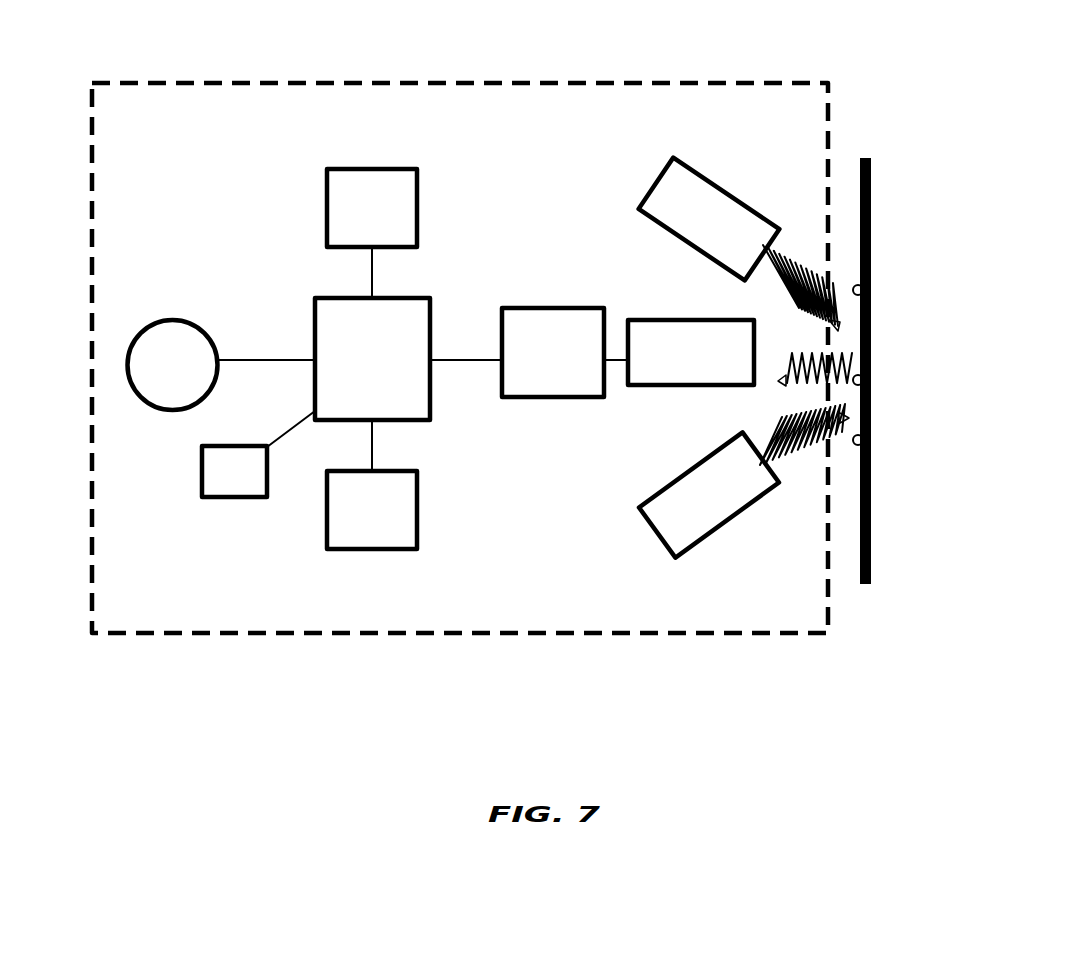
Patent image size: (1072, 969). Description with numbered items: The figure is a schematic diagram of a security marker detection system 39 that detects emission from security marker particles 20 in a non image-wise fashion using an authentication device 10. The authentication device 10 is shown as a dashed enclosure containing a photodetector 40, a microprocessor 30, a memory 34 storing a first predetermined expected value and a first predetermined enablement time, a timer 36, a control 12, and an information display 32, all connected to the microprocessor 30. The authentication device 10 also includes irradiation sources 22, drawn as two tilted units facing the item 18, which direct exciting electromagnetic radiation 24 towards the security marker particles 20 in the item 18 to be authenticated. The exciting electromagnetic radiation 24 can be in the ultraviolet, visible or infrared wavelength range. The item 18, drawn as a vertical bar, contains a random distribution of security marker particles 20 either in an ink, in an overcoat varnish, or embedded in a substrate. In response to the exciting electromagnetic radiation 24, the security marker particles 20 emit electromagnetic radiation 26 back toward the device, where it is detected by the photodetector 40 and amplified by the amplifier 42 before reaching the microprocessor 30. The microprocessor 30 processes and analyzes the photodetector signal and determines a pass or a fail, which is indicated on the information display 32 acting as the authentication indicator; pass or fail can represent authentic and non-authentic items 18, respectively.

The authentication device 10 is at (313, 83).
The control 12 is at (202, 472).
The item 18 is at (871, 205).
The security marker particles 20 is at (871, 380).
The irradiation sources 22 is at (668, 165).
The exciting electromagnetic radiation 24 is at (808, 265).
The emitted electromagnetic radiation 26 is at (782, 386).
The microprocessor 30 is at (315, 324).
The information display 32 is at (170, 320).
The memory 34 is at (380, 549).
The timer 36 is at (327, 198).
The security marker detection system 39 is at (947, 118).
The photodetector 40 is at (650, 320).
The amplifier 42 is at (549, 308).